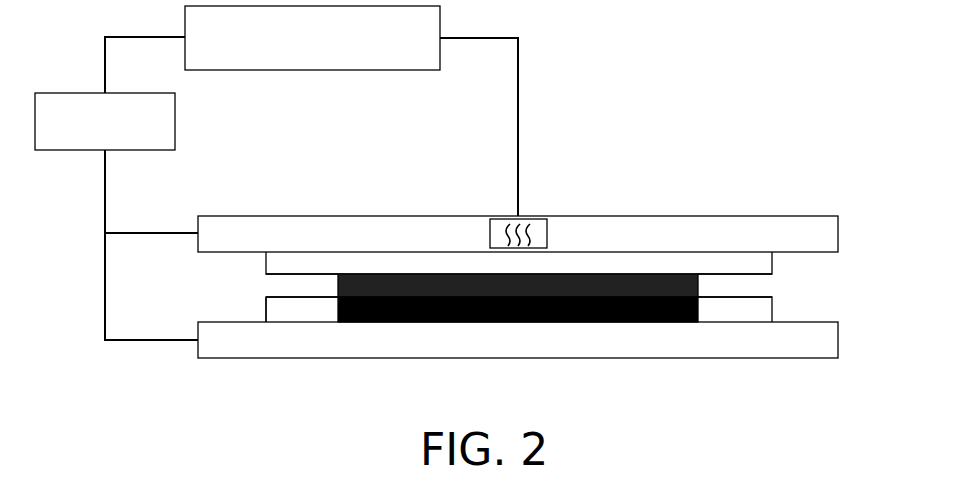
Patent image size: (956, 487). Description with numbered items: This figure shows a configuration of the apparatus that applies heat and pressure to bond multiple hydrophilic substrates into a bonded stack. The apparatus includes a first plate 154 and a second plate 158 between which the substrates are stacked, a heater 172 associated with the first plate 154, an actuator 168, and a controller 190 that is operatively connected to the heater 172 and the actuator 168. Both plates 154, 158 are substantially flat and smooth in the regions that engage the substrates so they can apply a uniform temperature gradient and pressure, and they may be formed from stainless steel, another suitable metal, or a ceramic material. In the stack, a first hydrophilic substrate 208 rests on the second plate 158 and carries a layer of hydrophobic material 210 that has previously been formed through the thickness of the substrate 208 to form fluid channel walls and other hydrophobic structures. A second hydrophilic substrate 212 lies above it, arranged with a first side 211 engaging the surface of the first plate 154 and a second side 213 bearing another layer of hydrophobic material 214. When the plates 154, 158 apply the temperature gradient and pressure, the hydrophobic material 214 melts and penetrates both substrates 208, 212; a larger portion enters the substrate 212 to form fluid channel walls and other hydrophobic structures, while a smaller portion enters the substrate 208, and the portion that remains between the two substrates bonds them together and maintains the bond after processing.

The first plate 154 is at (637, 216).
The second plate 158 is at (527, 358).
The actuator 168 is at (176, 118).
The heater 172 is at (499, 219).
The controller 190 is at (312, 70).
The hydrophilic substrate 208 is at (259, 310).
The layer of hydrophobic material 210 is at (699, 308).
The first side 211 is at (262, 253).
The second substrate 212 is at (266, 268).
The second side 213 is at (266, 275).
The hydrophobic material 214 is at (700, 285).